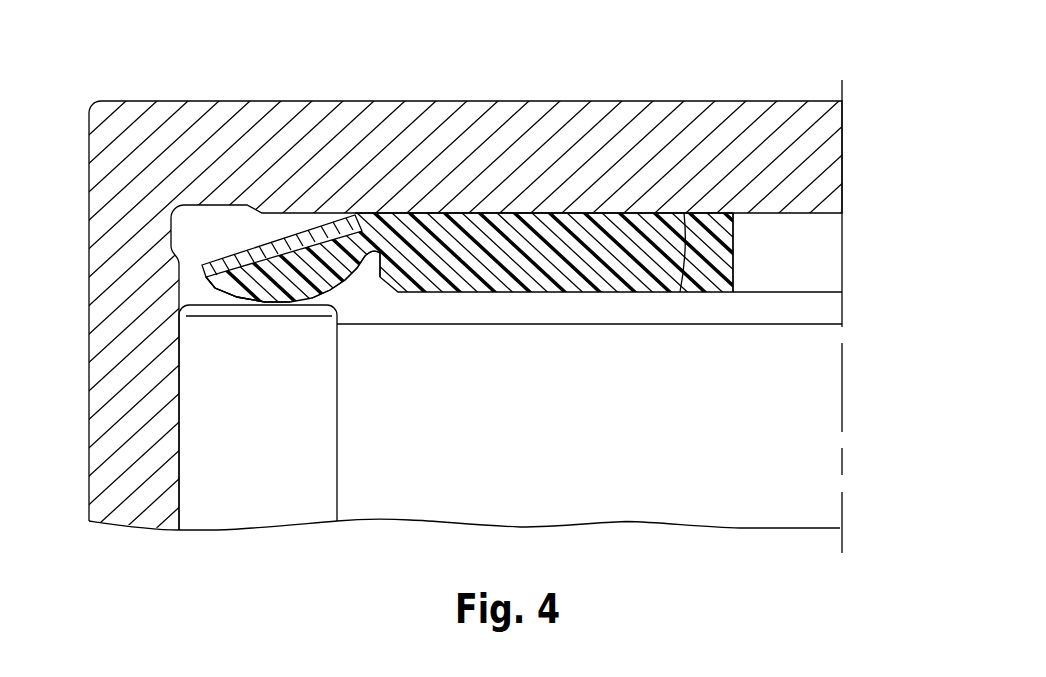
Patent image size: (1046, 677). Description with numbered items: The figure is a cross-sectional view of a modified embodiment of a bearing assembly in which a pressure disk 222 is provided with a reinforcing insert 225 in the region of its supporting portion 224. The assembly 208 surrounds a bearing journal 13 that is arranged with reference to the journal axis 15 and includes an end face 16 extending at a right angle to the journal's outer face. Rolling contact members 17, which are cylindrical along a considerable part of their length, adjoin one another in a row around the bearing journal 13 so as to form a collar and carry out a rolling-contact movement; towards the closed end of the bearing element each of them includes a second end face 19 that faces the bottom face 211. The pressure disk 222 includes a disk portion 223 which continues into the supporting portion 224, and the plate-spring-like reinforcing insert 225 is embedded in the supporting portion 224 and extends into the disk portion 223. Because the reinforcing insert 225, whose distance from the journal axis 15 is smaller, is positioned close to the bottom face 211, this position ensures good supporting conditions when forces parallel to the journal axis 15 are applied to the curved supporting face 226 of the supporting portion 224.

The housing 208 is at (579, 100).
The reinforcing insert 225 is at (291, 244).
The pressure disk 222 is at (520, 298).
The disk portion 223 is at (597, 262).
The bottom face 211 is at (680, 292).
The end face 16 is at (778, 280).
The supporting portion 224 is at (318, 270).
The second end face 19 is at (333, 288).
The curved supporting face 226 is at (259, 304).
The rolling contact members 17 is at (292, 458).
The bearing journal 13 is at (671, 480).
The journal axis 15 is at (842, 387).